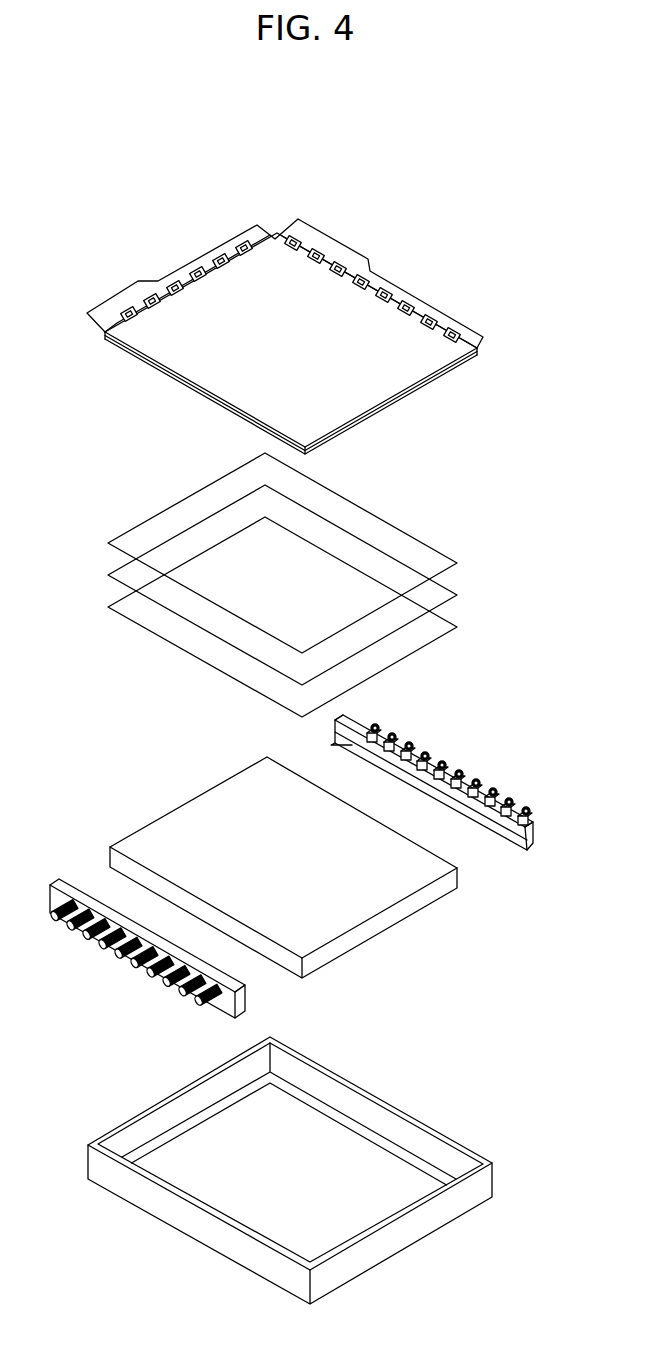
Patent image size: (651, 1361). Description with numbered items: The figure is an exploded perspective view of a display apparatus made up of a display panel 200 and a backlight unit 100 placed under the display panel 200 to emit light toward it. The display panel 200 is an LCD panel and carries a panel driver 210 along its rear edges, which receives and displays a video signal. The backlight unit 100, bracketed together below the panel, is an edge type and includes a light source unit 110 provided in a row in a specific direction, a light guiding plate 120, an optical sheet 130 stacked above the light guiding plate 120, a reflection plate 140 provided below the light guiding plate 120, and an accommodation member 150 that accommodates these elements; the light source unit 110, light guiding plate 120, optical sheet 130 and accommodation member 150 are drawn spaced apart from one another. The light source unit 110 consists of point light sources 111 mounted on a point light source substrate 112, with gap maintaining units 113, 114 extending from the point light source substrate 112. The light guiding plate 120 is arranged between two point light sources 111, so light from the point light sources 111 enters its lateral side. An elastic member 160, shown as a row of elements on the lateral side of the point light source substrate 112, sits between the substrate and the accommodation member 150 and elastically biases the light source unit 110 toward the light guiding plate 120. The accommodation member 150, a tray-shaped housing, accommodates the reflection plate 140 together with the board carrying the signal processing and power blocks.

The backlight unit 100 is at (548, 565).
The light source unit 110 is at (374, 810).
The point light source 111 is at (335, 742).
The point light source substrate 112 is at (524, 851).
The gap maintaining unit 113 is at (246, 985).
The gap maintaining unit 114 is at (241, 1011).
The light guiding plate 120 is at (152, 828).
The optical sheet 130 is at (470, 565).
The reflection plate 140 is at (422, 1168).
The accommodation member 150 is at (382, 1118).
The elastic member 160 is at (57, 920).
The display panel 200 is at (428, 380).
The panel driver 210 is at (342, 246).